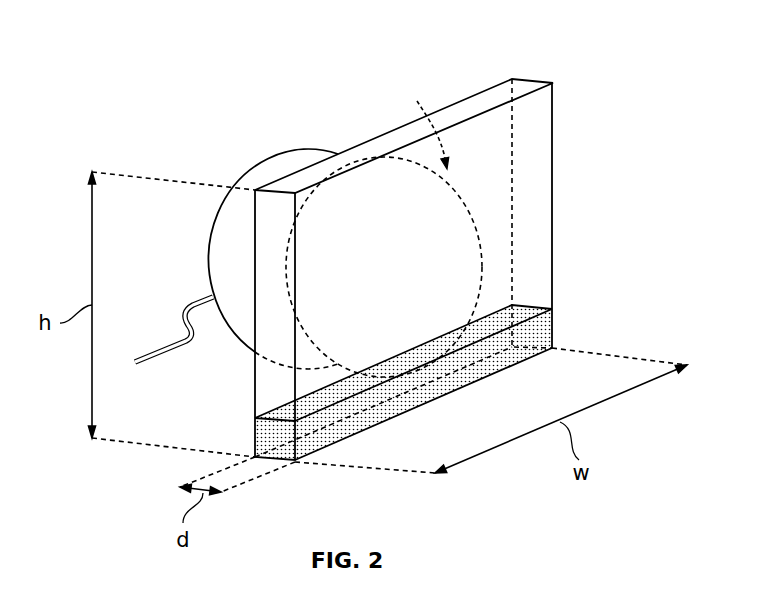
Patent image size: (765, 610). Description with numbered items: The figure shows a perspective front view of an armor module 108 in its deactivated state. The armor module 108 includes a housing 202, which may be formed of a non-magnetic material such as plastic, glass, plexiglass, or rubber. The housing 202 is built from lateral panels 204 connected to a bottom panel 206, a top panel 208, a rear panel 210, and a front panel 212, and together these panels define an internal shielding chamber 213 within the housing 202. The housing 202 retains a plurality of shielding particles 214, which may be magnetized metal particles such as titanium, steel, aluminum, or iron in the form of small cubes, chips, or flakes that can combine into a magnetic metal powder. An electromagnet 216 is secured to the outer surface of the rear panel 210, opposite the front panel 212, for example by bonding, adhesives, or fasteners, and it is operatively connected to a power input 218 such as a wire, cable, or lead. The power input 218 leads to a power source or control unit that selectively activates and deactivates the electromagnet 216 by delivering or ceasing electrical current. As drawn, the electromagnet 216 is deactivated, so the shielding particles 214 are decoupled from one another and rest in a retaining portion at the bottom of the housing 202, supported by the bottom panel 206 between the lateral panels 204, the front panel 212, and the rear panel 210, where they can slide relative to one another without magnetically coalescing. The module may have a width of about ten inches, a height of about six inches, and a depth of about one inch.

The armor module 108 is at (235, 240).
The housing 202 is at (415, 242).
The lateral panels 204 is at (283, 342).
The bottom panel 206 is at (403, 382).
The top panel 208 is at (467, 110).
The rear panel 210 is at (488, 141).
The front panel 212 is at (500, 262).
The internal shielding chamber 213 is at (424, 123).
The shielding particles 214 is at (462, 388).
The electromagnet 216 is at (213, 223).
The power input 218 is at (168, 357).